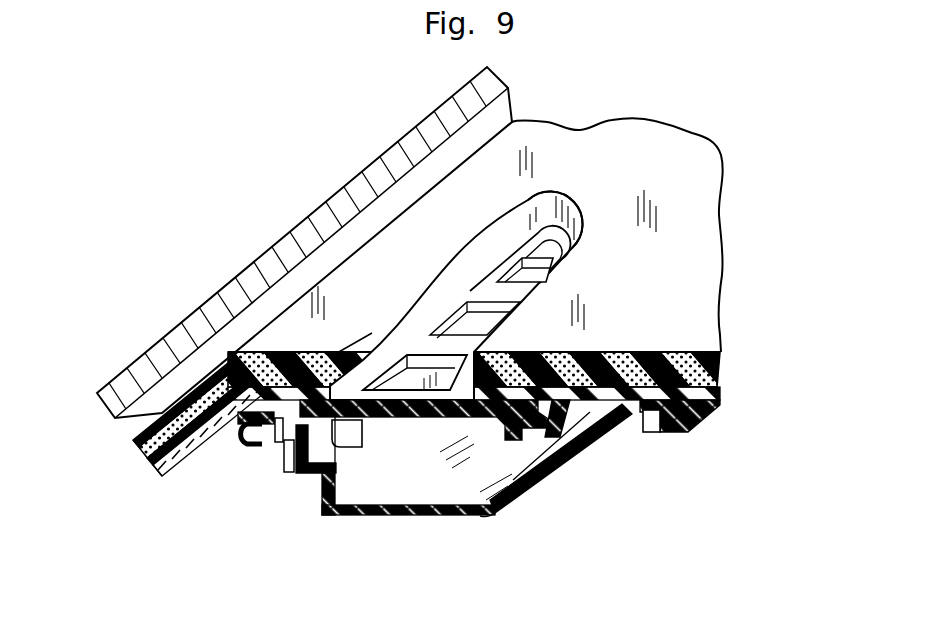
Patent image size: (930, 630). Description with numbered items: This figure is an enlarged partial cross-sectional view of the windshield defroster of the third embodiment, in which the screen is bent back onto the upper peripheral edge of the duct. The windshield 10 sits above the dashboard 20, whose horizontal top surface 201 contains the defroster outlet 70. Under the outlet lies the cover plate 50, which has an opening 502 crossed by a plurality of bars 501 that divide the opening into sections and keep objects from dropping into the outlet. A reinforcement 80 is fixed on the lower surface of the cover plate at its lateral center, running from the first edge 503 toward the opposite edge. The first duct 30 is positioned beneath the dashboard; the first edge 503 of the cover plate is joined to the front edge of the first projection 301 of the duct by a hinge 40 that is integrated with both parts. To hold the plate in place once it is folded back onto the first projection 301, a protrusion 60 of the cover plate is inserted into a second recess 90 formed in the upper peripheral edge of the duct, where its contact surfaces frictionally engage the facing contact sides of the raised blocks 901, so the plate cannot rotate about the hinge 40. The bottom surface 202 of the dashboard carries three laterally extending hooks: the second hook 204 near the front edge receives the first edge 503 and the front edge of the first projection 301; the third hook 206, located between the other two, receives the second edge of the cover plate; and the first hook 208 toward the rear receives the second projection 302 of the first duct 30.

The windshield 10 is at (294, 236).
The dashboard 20 is at (690, 278).
The top surface 201 is at (690, 143).
The bottom surface 202 is at (172, 478).
The second hook 204 is at (217, 443).
The first hook 208 is at (690, 426).
The second projection 302 is at (652, 432).
The first duct 30 is at (585, 452).
The hinge 40 is at (236, 456).
The cover plate 50 is at (507, 430).
The protrusion 60 is at (307, 452).
The defroster outlet 70 is at (440, 287).
The reinforcement 80 is at (418, 352).
The second recess 90 is at (345, 462).
The block 901 is at (402, 448).
The third hook 206 is at (552, 440).
The first projection 301 is at (268, 442).
The bar 501 is at (506, 292).
The opening 502 is at (542, 263).
The first edge 503 is at (276, 452).